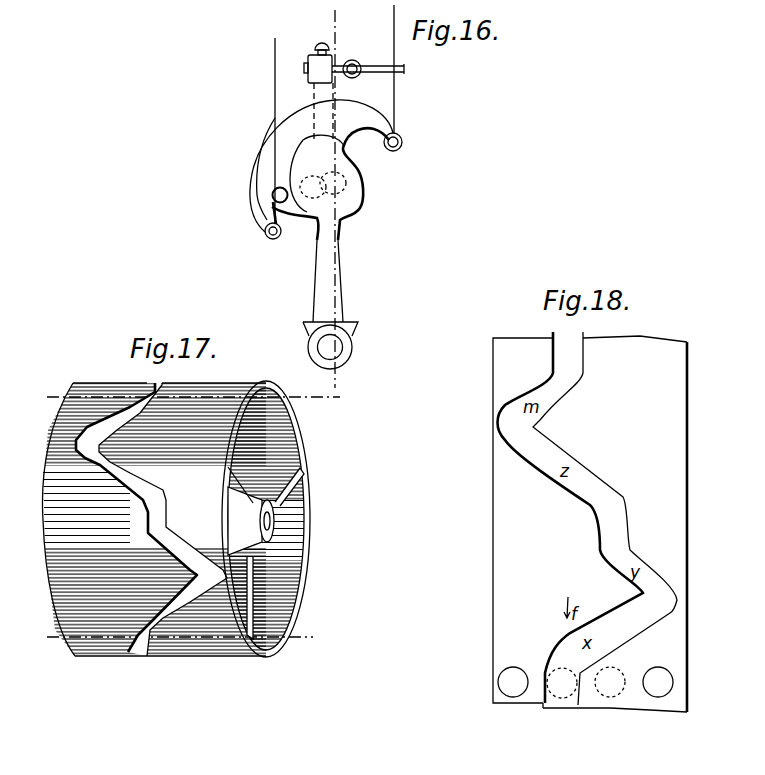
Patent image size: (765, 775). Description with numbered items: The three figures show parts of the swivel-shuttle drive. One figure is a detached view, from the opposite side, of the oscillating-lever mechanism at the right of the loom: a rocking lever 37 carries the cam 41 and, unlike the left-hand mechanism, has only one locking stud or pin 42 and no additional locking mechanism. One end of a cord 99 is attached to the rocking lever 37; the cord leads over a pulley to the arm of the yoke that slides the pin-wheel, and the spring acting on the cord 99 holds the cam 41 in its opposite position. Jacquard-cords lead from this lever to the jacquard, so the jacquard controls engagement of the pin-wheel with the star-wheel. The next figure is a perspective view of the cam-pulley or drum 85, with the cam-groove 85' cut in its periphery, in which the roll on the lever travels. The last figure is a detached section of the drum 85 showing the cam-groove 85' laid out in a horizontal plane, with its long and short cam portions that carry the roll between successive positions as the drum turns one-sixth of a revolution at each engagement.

In FIG. 16, the rocking lever 37 is at (316, 57).
In FIG. 16, the cord 99 is at (404, 70).
In FIG. 16, the cam 41 is at (340, 165).
In FIG. 16, the locking stud or pin 42 is at (272, 197).
In FIG. 17, the drum 85 is at (176, 535).
In FIG. 18, the drum 85 is at (605, 524).
In FIG. 17, the cam-groove 85' is at (151, 533).
In FIG. 18, the cam-groove 85' is at (588, 518).